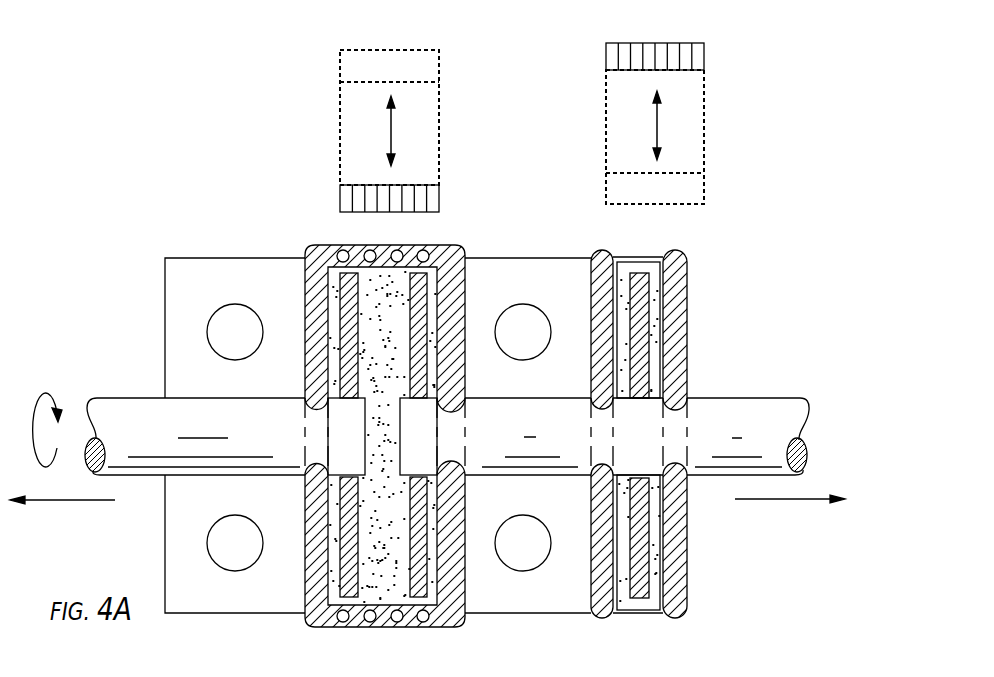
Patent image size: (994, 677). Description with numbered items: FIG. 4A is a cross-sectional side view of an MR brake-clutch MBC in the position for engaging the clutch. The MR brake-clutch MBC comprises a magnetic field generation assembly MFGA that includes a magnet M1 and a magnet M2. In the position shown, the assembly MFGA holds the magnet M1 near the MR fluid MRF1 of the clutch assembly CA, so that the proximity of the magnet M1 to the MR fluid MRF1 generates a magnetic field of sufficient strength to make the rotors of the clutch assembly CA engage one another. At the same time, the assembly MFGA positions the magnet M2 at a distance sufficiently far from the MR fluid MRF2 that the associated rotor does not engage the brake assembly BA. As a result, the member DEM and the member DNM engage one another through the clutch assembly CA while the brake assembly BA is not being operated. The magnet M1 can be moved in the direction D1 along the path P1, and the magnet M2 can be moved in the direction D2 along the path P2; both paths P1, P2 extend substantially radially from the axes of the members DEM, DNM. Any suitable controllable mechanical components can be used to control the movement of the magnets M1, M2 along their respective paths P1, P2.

The magnetic field generation assembly MFGA is at (284, 117).
The MR brake-clutch MBC is at (164, 201).
The direction of movement of magnet M1 D1 is at (390, 130).
The path of magnet M1 P1 is at (440, 130).
The magnet M1 is at (340, 196).
The magnet M2 is at (650, 43).
The direction of movement of magnet M2 D2 is at (657, 126).
The path of magnet M2 P2 is at (705, 127).
The member DEM is at (90, 400).
The member DNM is at (800, 398).
The clutch assembly CA is at (310, 627).
The MR fluid MRF1 is at (385, 597).
The MR fluid MRF2 is at (652, 600).
The brake assembly BA is at (680, 620).